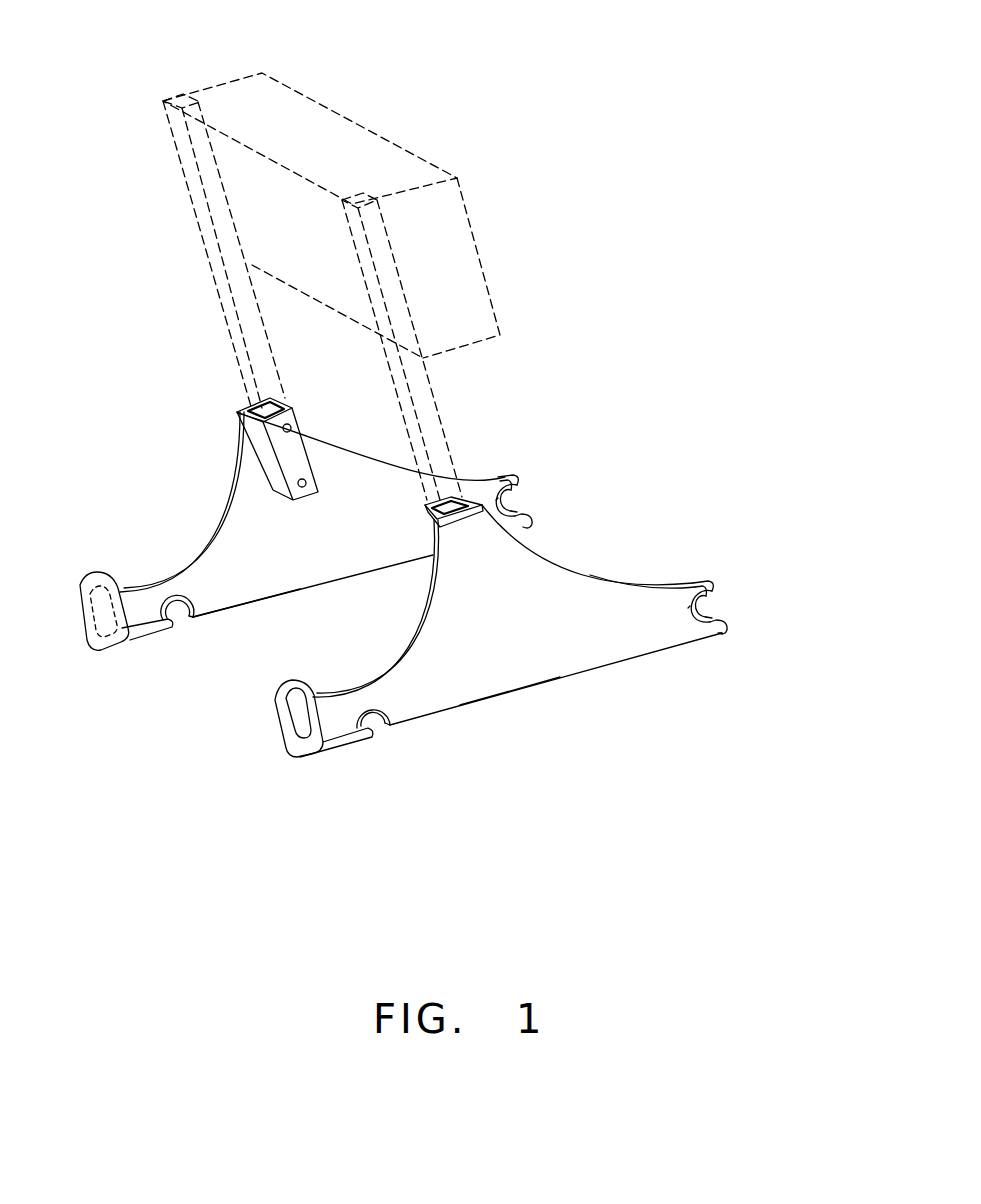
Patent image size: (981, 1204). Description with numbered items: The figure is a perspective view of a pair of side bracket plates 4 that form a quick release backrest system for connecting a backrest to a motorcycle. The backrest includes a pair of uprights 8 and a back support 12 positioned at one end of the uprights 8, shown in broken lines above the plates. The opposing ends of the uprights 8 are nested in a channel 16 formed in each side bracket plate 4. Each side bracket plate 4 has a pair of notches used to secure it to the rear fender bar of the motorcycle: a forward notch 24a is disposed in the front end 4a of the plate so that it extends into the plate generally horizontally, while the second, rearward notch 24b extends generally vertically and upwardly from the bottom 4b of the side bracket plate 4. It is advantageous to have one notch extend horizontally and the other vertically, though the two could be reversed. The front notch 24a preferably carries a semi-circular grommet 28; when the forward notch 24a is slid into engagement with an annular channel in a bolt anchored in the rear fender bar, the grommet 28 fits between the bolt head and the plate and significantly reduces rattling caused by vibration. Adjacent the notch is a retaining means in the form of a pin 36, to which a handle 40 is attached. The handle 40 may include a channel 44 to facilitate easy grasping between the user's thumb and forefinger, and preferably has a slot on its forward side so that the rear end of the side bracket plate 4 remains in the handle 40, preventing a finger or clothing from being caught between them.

The side bracket plate 4 is at (168, 505).
The front end of the side bracket plate 4a is at (648, 618).
The bottom of the side bracket plate 4b is at (376, 685).
The uprights 8 is at (294, 297).
The back support 12 is at (331, 195).
The channel 16 is at (304, 427).
The forward notch 24a is at (641, 494).
The rearward notch 24b is at (259, 738).
The semi-circular grommet 28 is at (608, 489).
The pin 36 is at (118, 703).
The handle 40 is at (172, 581).
The channel of the handle 44 is at (174, 725).